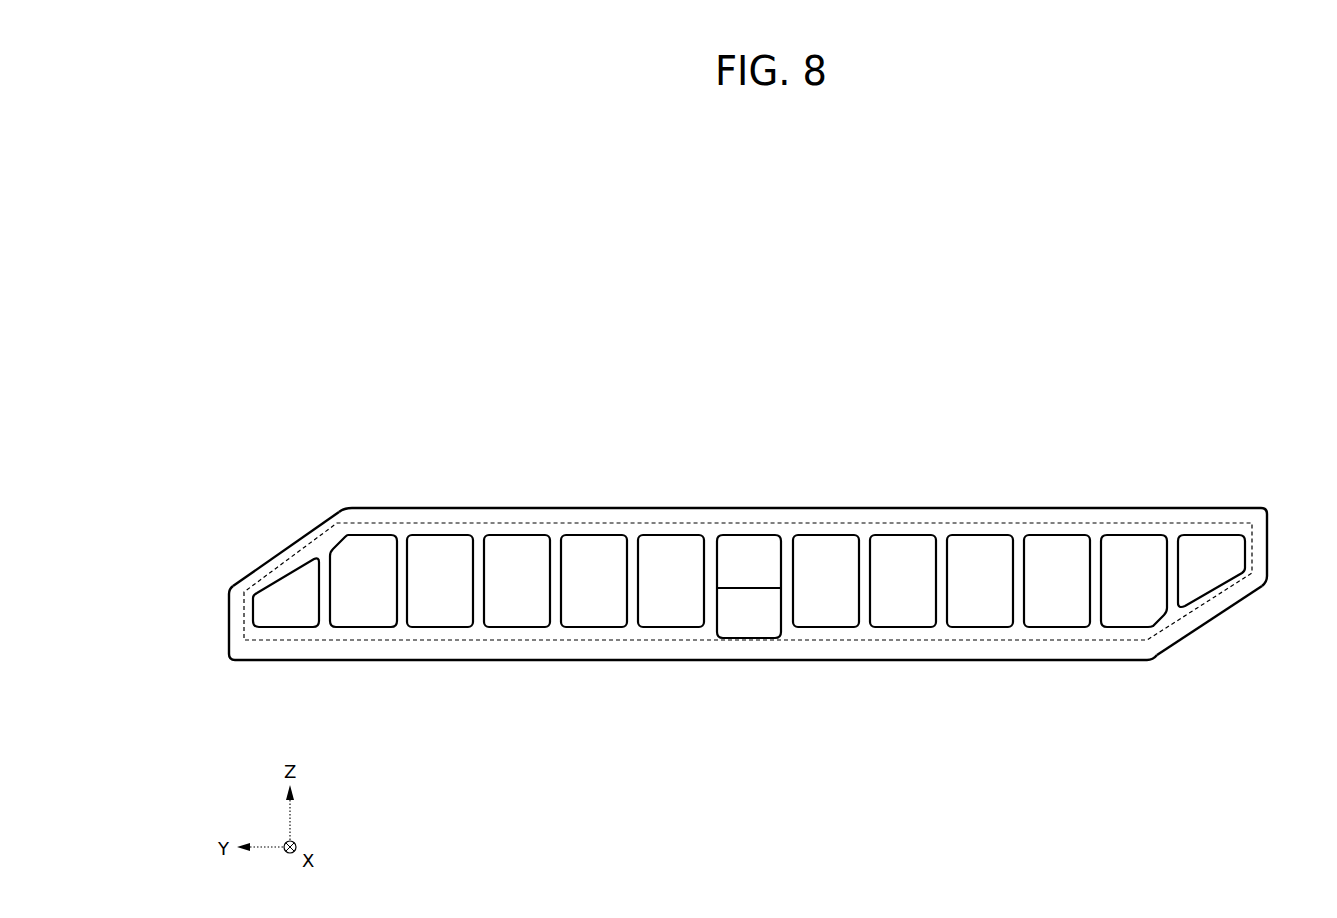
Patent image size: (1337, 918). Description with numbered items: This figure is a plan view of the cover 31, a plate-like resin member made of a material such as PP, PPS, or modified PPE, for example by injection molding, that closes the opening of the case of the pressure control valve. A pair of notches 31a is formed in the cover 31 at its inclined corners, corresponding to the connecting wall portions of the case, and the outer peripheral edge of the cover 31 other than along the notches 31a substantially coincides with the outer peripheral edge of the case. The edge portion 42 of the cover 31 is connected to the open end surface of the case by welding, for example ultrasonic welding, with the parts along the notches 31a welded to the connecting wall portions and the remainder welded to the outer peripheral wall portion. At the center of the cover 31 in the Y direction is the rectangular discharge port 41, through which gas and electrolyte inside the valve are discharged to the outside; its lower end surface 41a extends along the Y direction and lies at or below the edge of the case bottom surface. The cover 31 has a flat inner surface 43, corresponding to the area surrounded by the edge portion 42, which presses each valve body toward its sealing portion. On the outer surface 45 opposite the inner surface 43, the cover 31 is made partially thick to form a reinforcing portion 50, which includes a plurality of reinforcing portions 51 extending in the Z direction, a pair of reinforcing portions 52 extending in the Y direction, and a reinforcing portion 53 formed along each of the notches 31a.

The cover 31 is at (1126, 478).
The notches 31a is at (283, 552).
The discharge port 41 is at (777, 617).
The lower end surface 41a is at (738, 627).
The edge portion 42 is at (836, 517).
The inner surface 43 is at (670, 575).
The outer surface 45 is at (590, 597).
The reinforcing portion 50 is at (748, 583).
The reinforcing portions 51 is at (478, 578).
The reinforcing portions 52 is at (975, 527).
The reinforcing portion 53 is at (318, 552).